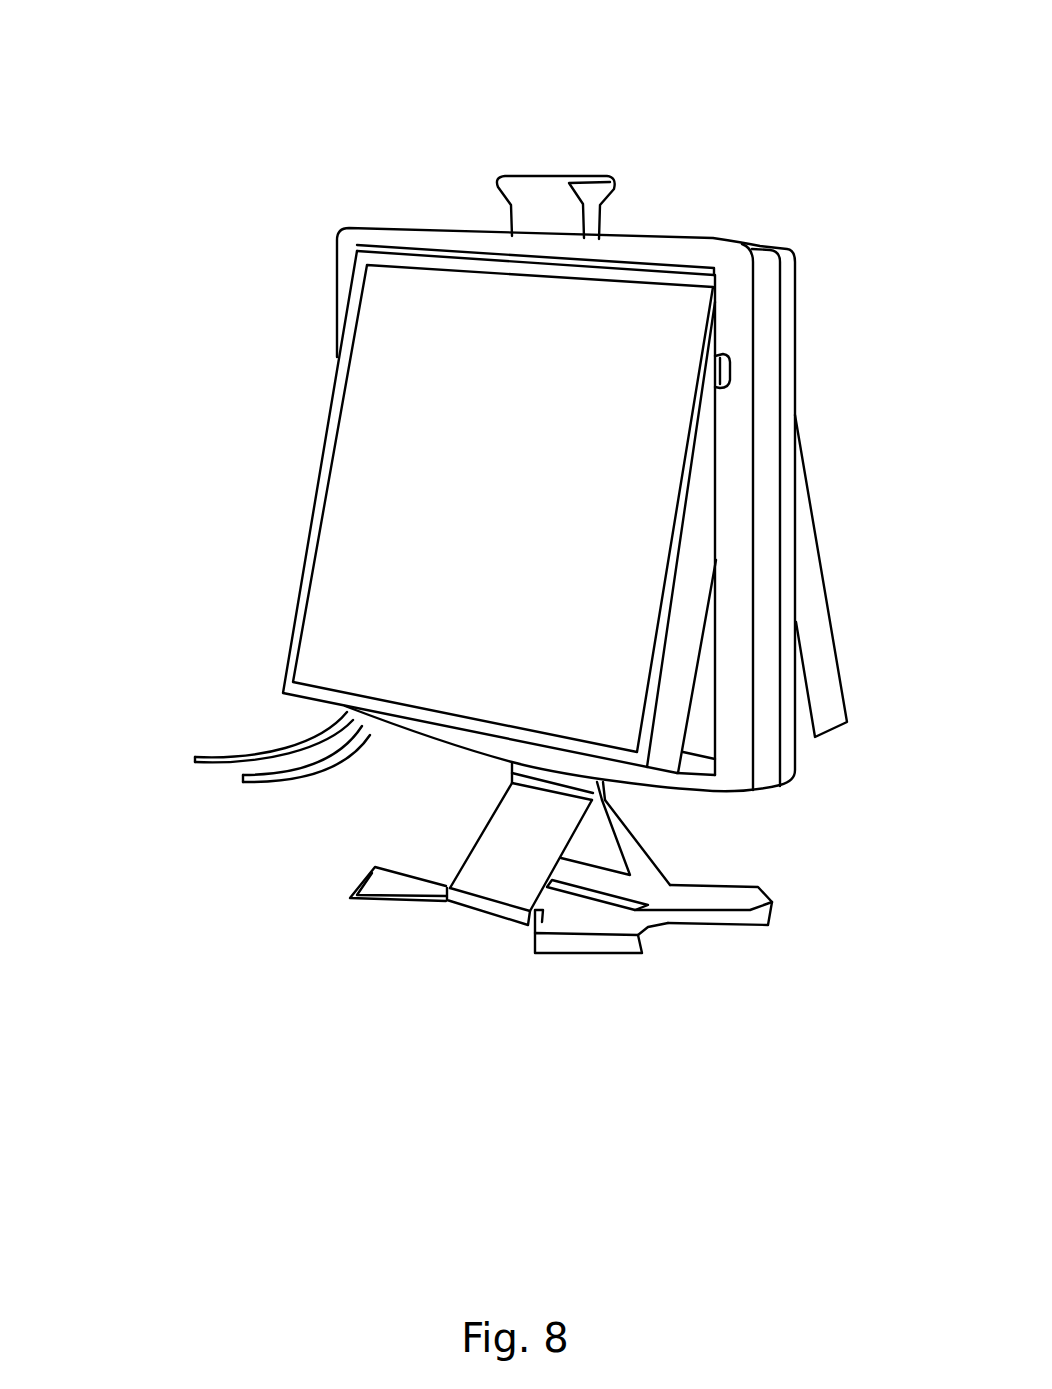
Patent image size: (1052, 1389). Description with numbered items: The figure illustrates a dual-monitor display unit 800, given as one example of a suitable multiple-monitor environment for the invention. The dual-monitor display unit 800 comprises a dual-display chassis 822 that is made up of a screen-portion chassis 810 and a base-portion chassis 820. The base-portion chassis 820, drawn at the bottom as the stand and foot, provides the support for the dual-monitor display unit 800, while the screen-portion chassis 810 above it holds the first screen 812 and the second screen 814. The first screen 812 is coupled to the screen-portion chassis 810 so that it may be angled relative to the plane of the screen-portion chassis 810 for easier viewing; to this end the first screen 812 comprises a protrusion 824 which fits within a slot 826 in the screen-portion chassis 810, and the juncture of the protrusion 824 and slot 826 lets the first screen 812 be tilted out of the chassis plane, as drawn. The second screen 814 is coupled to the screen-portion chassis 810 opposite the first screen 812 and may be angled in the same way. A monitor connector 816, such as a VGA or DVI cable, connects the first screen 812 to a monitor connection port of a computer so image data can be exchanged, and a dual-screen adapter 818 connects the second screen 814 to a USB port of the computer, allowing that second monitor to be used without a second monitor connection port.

The dual-monitor display unit 800 is at (486, 483).
The screen-portion chassis 810 is at (547, 455).
The first screen 812 is at (463, 512).
The second screen 814 is at (856, 576).
The monitor connector 816 is at (232, 709).
The dual-screen adapter 818 is at (254, 799).
The base-portion chassis 820 is at (507, 844).
The dual-display chassis 822 is at (607, 873).
The protrusion 824 is at (666, 344).
The slot 826 is at (807, 517).